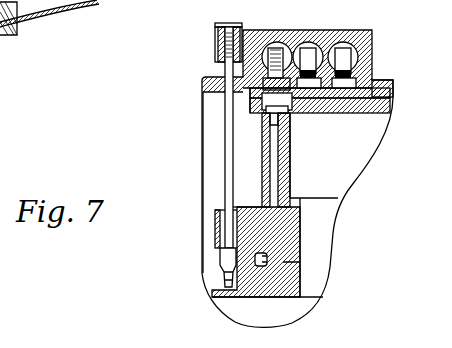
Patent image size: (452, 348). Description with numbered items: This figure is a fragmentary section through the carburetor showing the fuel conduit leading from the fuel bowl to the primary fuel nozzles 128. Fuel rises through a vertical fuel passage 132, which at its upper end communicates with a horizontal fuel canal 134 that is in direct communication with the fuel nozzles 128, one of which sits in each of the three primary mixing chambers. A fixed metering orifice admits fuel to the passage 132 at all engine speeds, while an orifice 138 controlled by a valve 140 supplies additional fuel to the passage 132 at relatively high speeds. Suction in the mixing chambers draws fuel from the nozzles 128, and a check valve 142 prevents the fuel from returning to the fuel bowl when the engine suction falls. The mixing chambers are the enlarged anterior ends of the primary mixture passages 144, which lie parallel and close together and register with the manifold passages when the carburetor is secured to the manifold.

The primary fuel nozzle 128 is at (312, 44).
The primary mixture passage 144 is at (274, 47).
The horizontal fuel canal 134 is at (334, 114).
The check valve 142 is at (284, 118).
The vertical fuel passage 132 is at (280, 157).
The valve 140 is at (228, 235).
The orifice 138 is at (213, 267).